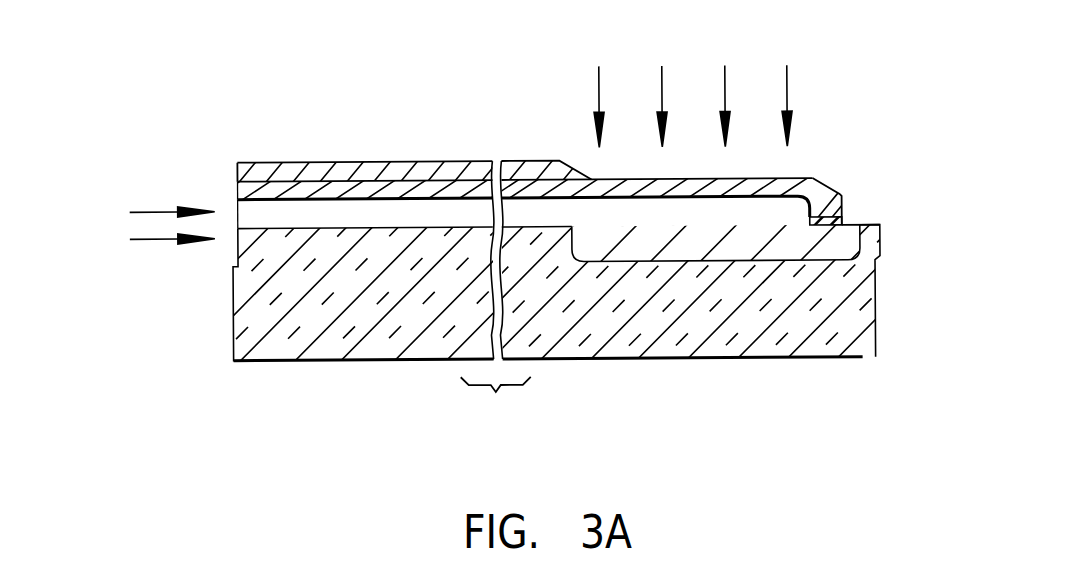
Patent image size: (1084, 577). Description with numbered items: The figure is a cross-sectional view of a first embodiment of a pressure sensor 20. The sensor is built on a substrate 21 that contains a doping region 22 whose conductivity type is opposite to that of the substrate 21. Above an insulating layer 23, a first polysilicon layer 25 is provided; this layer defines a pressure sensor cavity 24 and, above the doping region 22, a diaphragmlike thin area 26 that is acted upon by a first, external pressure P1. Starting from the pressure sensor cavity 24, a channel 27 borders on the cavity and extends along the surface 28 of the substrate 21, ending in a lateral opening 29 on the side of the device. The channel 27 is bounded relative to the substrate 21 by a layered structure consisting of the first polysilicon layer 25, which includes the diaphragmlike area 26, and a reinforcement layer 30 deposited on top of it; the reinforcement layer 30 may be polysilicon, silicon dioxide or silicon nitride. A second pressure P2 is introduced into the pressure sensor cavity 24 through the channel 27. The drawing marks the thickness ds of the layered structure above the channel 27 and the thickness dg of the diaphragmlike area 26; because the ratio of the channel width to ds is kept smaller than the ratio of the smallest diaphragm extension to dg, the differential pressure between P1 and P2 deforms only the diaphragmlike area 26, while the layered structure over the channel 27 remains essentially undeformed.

The pressure sensor 20 is at (569, 108).
The substrate 21 is at (878, 258).
The doping region 22 is at (858, 262).
The insulating layer 23 is at (846, 217).
The pressure sensor cavity 24 is at (819, 186).
The first polysilicon layer 25 is at (832, 199).
The diaphragmlike thin area 26 is at (792, 178).
The channel 27 is at (367, 210).
The surface of the substrate 28 is at (463, 227).
The lateral opening 29 is at (237, 212).
The reinforcement layer 30 is at (433, 163).
The first pressure P1 is at (693, 83).
The second pressure P2 is at (150, 226).
The thickness of the layered structure ds is at (258, 209).
The thickness of the diaphragmlike area dg is at (674, 209).